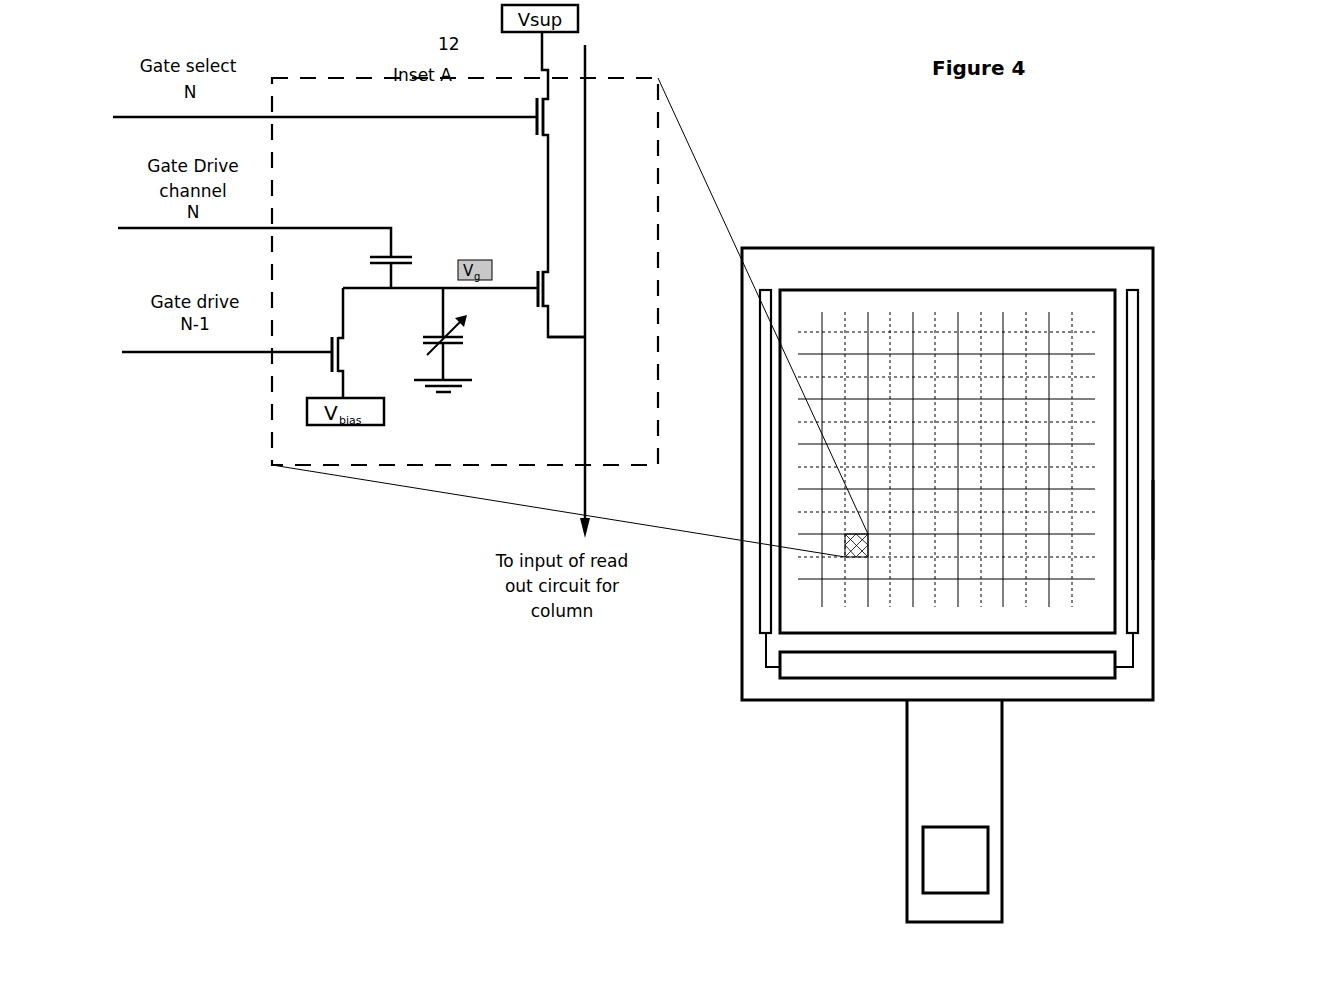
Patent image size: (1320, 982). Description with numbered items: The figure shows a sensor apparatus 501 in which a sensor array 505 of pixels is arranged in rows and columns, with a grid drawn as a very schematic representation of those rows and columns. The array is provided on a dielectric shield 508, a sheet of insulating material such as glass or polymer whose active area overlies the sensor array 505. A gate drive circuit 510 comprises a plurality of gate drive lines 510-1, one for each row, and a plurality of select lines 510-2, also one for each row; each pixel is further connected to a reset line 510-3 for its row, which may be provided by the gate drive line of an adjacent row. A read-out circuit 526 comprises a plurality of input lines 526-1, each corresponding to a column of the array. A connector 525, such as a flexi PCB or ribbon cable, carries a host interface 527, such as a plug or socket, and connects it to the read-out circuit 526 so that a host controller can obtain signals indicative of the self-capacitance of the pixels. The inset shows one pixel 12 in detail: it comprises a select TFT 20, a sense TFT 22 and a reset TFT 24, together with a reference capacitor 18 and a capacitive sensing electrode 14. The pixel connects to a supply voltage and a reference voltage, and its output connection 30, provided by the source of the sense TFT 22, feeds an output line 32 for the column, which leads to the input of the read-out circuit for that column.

The pixel 12 is at (258, 470).
The capacitive sensing electrode 14 is at (440, 340).
The reference capacitor 18 is at (413, 262).
The select TFT 20 is at (537, 107).
The sense TFT 22 is at (538, 273).
The reset TFT 24 is at (331, 345).
The output connection 30 is at (575, 340).
The output line 32 is at (578, 472).
The sensor apparatus 501 is at (596, 708).
The sensor array 505 is at (1105, 475).
The dielectric shield 508 is at (1143, 522).
The gate drive circuit 510 is at (1132, 340).
The gate drive line 510-1 is at (241, 229).
The select line 510-2 is at (309, 103).
The reset line 510-3 is at (211, 332).
The connector 525 is at (954, 811).
The read-out circuit 526 is at (1125, 672).
The input line 526-1 is at (611, 515).
The host interface 527 is at (955, 860).